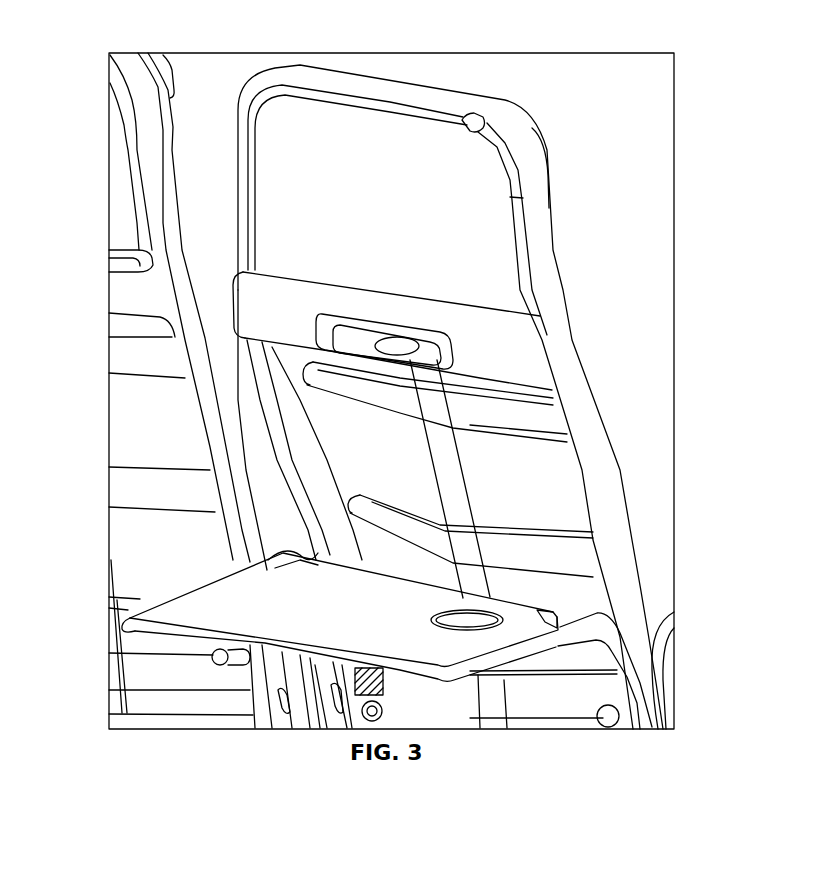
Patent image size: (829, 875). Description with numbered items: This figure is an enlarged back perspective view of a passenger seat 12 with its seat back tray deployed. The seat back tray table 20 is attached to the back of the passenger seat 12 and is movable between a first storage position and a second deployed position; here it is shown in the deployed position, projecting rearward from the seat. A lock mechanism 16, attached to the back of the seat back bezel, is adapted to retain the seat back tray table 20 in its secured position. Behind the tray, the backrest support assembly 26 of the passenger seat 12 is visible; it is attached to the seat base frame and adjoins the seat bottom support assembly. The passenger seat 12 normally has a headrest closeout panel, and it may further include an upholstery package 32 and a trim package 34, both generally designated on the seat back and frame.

The passenger seat 12 is at (487, 67).
The lock mechanism 16 is at (445, 340).
The seat back tray table 20 is at (160, 604).
The backrest support assembly 26 is at (547, 490).
The upholstery package 32 is at (553, 253).
The trim package 34 is at (549, 157).